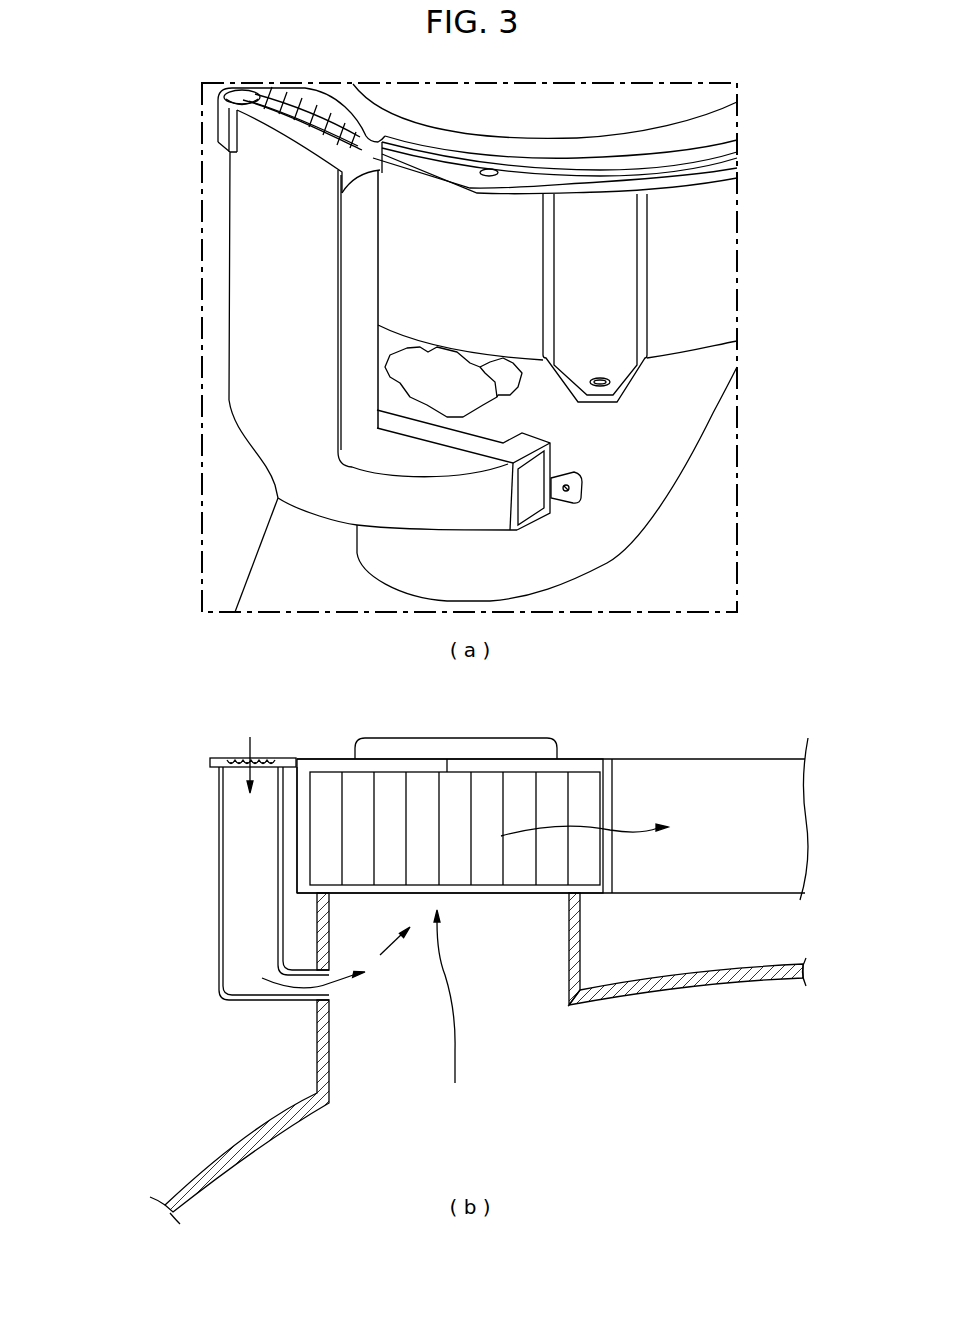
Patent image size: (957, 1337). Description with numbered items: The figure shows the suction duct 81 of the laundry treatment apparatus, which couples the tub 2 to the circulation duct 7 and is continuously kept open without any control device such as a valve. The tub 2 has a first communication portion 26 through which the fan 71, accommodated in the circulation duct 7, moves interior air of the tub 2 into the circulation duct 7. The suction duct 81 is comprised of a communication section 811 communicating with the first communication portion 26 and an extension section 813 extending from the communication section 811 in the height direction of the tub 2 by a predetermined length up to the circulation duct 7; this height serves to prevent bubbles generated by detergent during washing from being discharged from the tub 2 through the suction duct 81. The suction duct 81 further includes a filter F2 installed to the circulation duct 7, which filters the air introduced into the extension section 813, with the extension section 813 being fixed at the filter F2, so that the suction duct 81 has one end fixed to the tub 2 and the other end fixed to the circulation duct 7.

The circulation duct 7 is at (703, 278).
The fan 71 is at (555, 786).
The suction duct 81 is at (120, 363).
The extension section 813 is at (263, 355).
The communication section 811 is at (297, 490).
The first communication portion 26 is at (672, 446).
The tub 2 is at (230, 1150).
The filter F2 is at (242, 121).